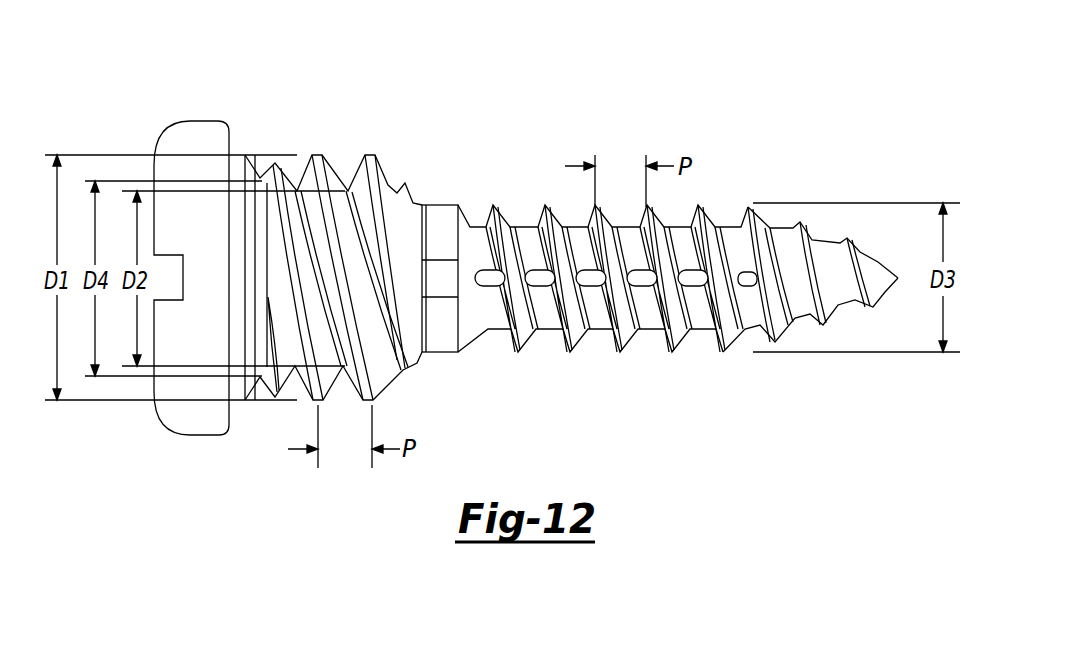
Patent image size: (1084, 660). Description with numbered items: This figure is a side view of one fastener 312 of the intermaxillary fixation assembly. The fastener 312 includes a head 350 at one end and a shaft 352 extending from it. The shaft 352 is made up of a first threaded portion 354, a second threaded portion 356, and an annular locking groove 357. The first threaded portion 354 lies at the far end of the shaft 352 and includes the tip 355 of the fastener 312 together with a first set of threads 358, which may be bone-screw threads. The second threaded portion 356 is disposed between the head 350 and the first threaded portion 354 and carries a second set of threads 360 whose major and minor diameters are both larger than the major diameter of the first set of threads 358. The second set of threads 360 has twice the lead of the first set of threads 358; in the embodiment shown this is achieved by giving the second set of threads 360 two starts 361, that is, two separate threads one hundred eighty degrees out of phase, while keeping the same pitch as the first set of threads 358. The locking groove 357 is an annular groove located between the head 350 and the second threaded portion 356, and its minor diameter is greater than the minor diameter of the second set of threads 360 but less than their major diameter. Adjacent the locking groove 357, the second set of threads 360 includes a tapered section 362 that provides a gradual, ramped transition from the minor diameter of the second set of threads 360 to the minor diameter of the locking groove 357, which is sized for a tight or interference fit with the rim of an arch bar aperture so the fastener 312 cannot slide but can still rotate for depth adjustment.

The fastener 312 is at (746, 104).
The head 350 is at (197, 112).
The shaft 352 is at (497, 377).
The first threaded portion 354 is at (673, 355).
The tip 355 is at (893, 278).
The second threaded portion 356 is at (376, 148).
The annular locking groove 357 is at (260, 185).
The first set of threads 358 is at (698, 207).
The second set of threads 360 is at (373, 373).
The starts 361 is at (445, 212).
The tapered section 362 is at (280, 382).